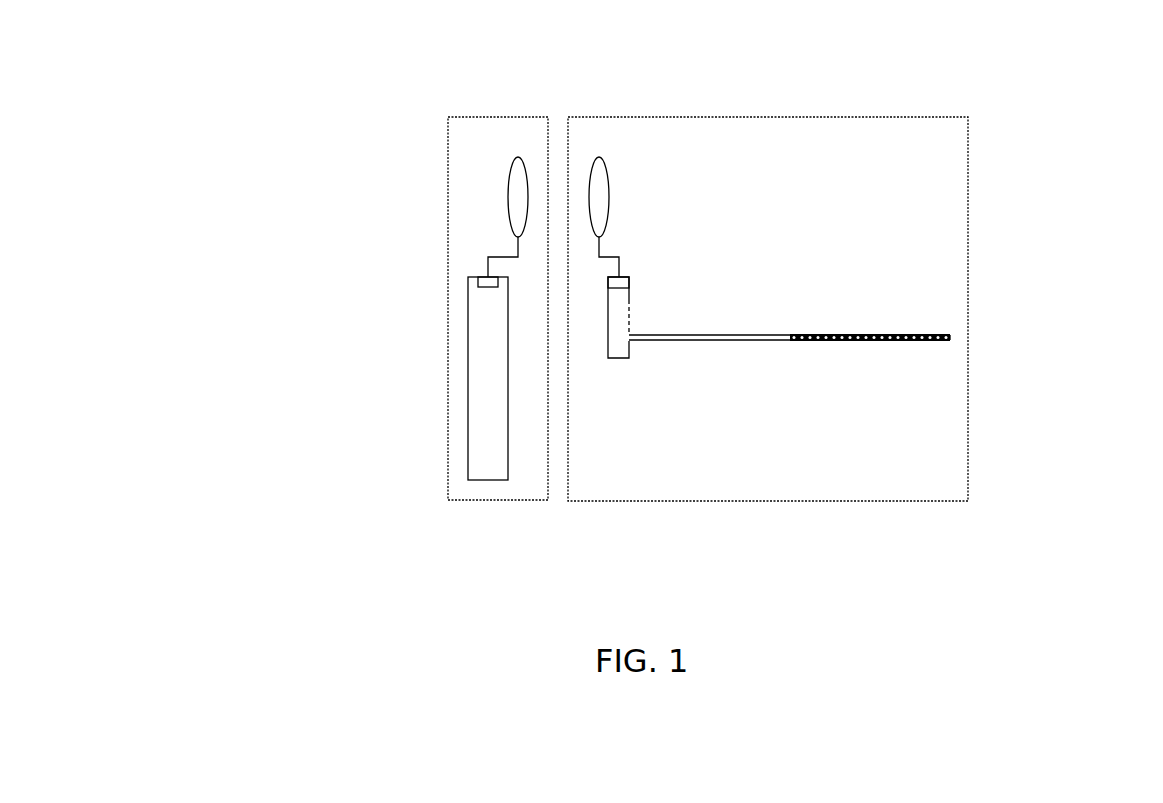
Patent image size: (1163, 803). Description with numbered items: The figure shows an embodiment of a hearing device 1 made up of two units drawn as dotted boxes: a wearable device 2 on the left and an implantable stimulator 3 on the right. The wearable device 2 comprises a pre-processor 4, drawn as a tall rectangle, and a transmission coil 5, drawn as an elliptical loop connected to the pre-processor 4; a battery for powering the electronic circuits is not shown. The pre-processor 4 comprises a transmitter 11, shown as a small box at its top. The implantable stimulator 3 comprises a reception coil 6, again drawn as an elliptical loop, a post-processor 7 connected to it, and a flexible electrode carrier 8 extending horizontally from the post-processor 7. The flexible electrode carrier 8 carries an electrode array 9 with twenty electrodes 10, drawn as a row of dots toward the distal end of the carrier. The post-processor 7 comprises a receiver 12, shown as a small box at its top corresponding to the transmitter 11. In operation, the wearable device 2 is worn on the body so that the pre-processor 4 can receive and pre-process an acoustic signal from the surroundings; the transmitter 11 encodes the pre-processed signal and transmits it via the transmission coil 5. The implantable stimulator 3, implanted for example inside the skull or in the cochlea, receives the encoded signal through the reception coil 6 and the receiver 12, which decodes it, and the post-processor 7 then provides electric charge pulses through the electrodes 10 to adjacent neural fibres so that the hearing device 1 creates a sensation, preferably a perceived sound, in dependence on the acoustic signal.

The hearing device 1 is at (327, 137).
The wearable device 2 is at (449, 493).
The implantable stimulator 3 is at (968, 501).
The pre-processor 4 is at (477, 297).
The transmission coil 5 is at (505, 173).
The reception coil 6 is at (612, 170).
The post-processor 7 is at (625, 305).
The flexible electrode carrier 8 is at (748, 360).
The electrode array 9 is at (860, 353).
The electrodes 10 is at (940, 335).
The transmitter 11 is at (480, 282).
The receiver 12 is at (610, 283).